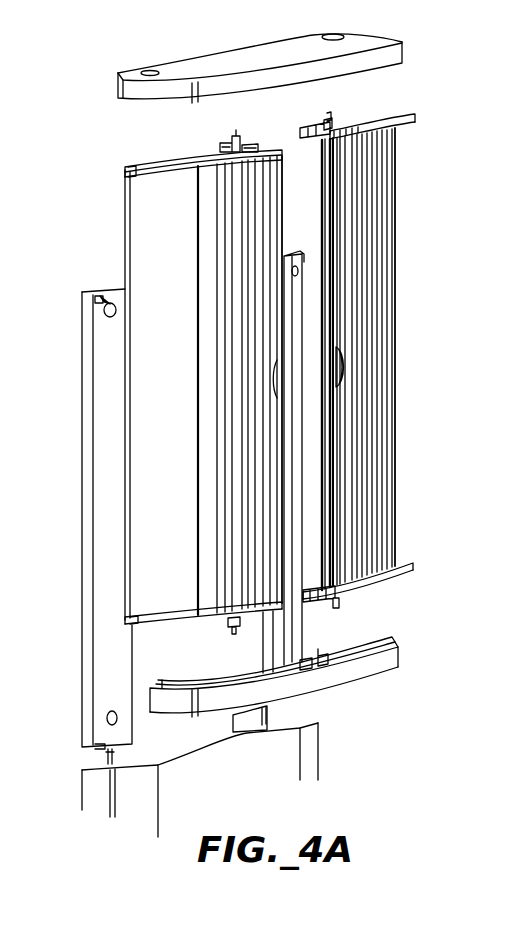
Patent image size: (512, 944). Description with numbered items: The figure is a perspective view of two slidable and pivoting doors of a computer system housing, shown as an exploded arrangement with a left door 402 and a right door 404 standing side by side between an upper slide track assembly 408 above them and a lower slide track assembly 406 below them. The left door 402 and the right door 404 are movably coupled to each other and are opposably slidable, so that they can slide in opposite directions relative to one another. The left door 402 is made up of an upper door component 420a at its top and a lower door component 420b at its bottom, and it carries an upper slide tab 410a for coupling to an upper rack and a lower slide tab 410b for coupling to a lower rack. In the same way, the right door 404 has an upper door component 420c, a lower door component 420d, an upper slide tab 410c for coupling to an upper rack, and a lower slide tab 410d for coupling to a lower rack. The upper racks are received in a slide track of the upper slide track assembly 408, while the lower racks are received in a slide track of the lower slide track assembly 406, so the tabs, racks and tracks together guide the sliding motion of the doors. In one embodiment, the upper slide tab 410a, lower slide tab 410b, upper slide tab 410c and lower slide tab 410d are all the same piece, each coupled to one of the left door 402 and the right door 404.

The left door 402 is at (124, 226).
The right door 404 is at (396, 212).
The lower slide track assembly 406 is at (357, 673).
The upper slide track assembly 408 is at (263, 63).
The upper slide tab 410a is at (233, 138).
The lower slide tab 410b is at (233, 628).
The upper slide tab 410c is at (334, 122).
The lower slide tab 410d is at (343, 600).
The upper door component 420a is at (152, 165).
The lower door component 420b is at (140, 626).
The upper door component 420c is at (408, 123).
The lower door component 420d is at (402, 564).